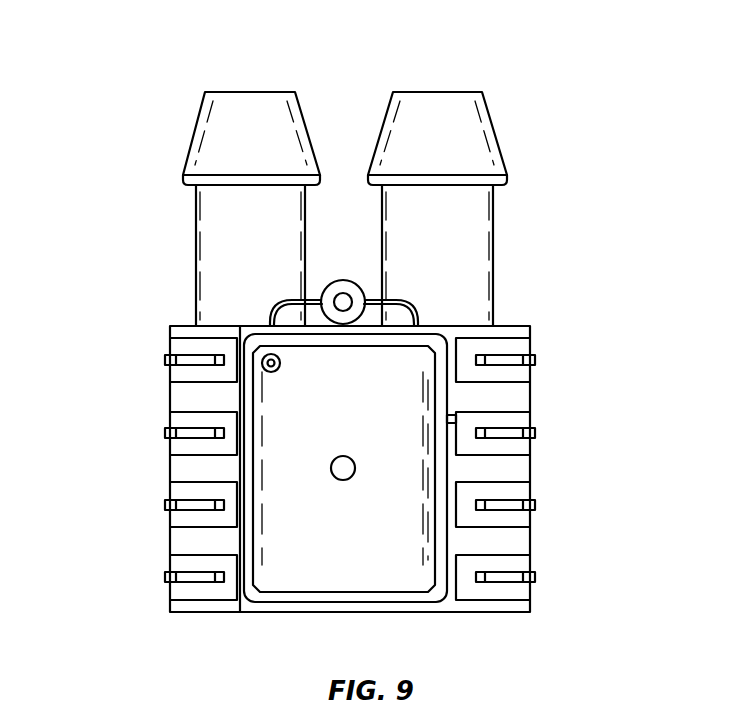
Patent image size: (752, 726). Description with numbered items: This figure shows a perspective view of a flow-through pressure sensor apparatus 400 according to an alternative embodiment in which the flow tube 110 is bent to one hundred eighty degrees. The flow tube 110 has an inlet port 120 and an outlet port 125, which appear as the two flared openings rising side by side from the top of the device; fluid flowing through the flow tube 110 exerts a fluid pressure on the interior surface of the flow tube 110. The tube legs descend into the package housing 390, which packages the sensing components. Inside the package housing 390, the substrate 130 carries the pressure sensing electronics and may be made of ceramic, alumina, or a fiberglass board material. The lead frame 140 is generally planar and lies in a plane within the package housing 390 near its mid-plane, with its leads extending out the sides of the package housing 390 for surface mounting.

The flow-through pressure sensor apparatus 400 is at (120, 68).
The inlet port 120 is at (283, 92).
The outlet port 125 is at (470, 92).
The flow tube 110 is at (493, 237).
The package housing 390 is at (528, 310).
The lead frame 140 is at (512, 427).
The substrate 130 is at (393, 583).